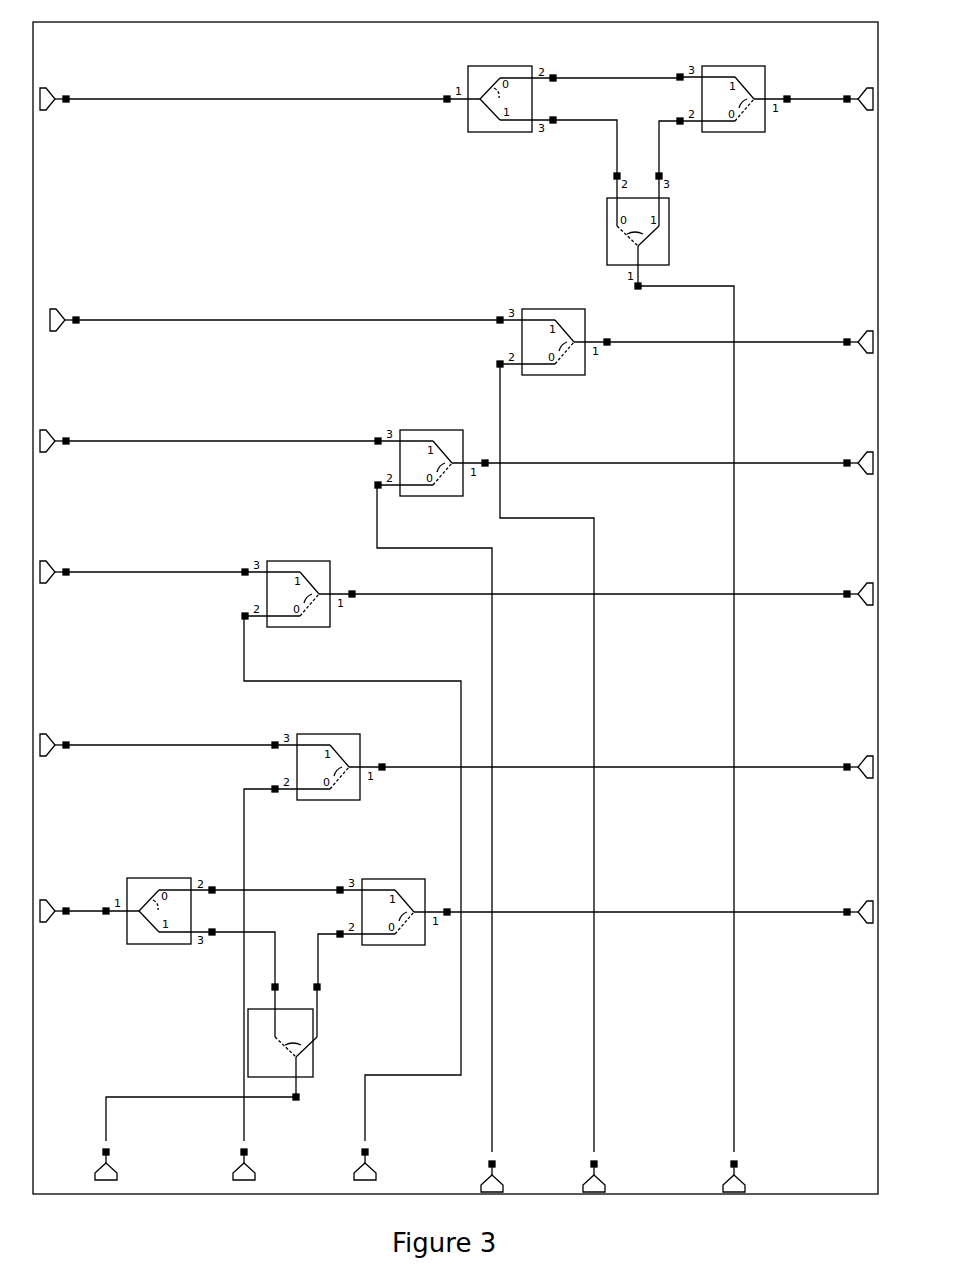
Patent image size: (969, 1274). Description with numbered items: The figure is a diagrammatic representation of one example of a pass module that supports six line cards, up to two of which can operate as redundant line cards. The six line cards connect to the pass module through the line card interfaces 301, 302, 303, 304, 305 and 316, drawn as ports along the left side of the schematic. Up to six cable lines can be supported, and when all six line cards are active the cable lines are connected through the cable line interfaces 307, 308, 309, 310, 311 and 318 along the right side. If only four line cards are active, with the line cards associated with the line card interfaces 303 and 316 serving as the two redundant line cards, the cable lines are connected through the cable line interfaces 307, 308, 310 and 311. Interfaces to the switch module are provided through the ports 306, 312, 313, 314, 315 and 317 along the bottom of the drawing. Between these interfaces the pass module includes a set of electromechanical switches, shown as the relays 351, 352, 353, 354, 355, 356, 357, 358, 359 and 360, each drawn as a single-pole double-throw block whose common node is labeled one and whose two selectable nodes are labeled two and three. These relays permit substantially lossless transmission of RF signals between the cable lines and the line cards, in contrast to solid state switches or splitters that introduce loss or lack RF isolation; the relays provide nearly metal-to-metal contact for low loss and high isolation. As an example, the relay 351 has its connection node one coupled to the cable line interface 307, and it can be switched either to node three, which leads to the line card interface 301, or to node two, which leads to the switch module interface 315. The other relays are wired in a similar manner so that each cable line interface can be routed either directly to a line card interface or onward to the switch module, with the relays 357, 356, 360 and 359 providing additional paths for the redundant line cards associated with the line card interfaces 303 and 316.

The line card interface 301 is at (275, 306).
The line card interface 302 is at (208, 427).
The line card interface 303 is at (243, 85).
The line card interface 304 is at (142, 559).
The line card interface 305 is at (157, 732).
The switch module interface port 306 is at (83, 1169).
The cable line interface 307 is at (743, 351).
The cable line interface 308 is at (682, 470).
The cable line interface 309 is at (833, 110).
The cable line interface 310 is at (615, 602).
The cable line interface 311 is at (630, 777).
The switch module interface port 312 is at (210, 1172).
The switch module interface port 313 is at (330, 1173).
The switch module interface port 314 is at (451, 1172).
The switch module interface port 315 is at (558, 1172).
The line card interface 316 is at (83, 899).
The switch module interface port 317 is at (695, 1172).
The cable line interface 318 is at (663, 921).
The relay 351 is at (566, 729).
The relay 352 is at (433, 777).
The relay 353 is at (724, 115).
The relay 354 is at (351, 838).
The relay 355 is at (314, 925).
The relay 356 is at (625, 662).
The relay 357 is at (562, 90).
The relay 358 is at (384, 929).
The relay 359 is at (236, 1062).
The relay 360 is at (221, 902).